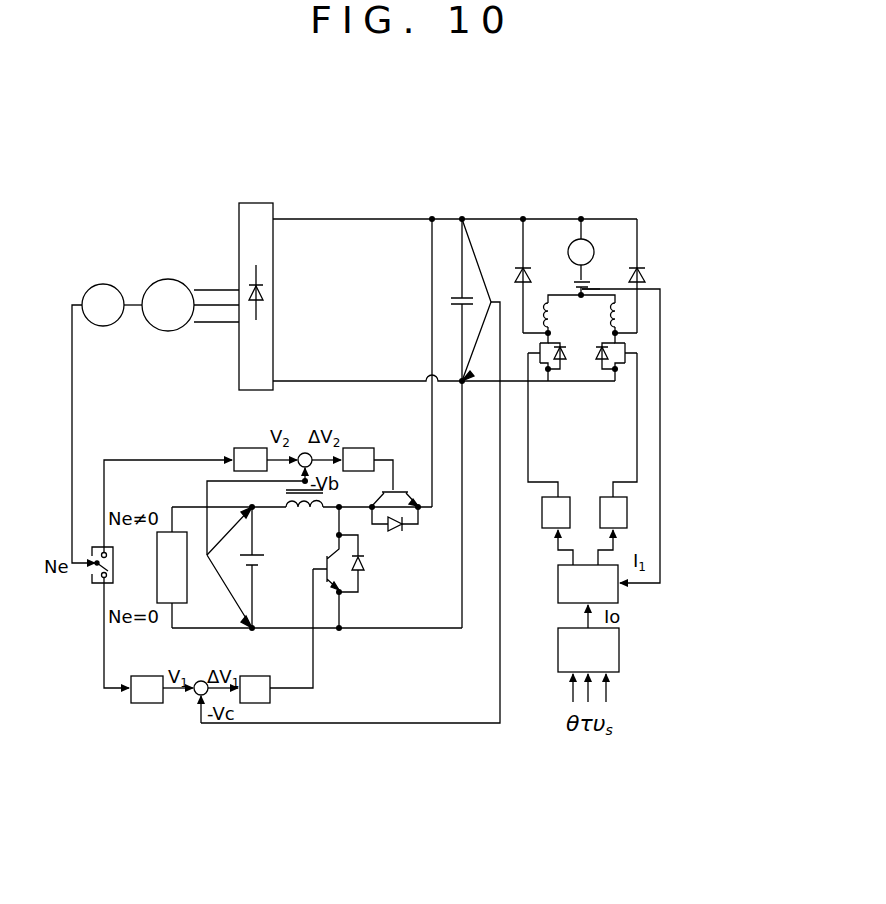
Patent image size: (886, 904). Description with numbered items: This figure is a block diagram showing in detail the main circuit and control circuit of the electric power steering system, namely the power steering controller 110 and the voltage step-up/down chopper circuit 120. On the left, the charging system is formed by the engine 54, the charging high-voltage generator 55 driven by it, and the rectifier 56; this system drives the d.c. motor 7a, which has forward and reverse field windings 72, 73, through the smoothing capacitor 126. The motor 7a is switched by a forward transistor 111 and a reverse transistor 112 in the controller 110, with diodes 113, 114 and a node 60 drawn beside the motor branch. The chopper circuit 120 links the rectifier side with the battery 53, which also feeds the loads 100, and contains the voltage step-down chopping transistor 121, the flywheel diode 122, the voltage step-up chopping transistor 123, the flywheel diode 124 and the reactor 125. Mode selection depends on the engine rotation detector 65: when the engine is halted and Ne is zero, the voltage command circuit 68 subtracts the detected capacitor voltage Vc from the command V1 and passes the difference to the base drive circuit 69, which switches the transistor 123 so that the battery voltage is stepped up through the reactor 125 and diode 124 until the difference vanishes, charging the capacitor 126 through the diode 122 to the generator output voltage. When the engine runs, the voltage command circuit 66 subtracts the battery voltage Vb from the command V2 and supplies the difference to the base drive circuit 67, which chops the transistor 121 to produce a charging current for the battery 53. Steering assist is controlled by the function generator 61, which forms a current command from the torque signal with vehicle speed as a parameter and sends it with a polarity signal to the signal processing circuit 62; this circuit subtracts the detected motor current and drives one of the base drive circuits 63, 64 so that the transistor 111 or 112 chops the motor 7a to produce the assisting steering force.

The engine 54 is at (107, 284).
The charging generator 55 is at (166, 279).
The rectifier 56 is at (258, 203).
The capacitor 126 is at (454, 292).
The diode 113 is at (532, 274).
The d.c. motor 7a is at (593, 245).
The current detection node 60 is at (588, 285).
The diode 114 is at (646, 277).
The field coil 72 is at (543, 320).
The field coil 73 is at (663, 317).
The forward transistor 111 is at (549, 357).
The reverse transistor 112 is at (633, 348).
The power steering controller 110 is at (727, 627).
The voltage step-down chopping voltage command circuit 66 is at (238, 448).
The base drive circuit 67 is at (366, 448).
The battery 53 is at (237, 565).
The loads 100 is at (167, 605).
The engine rotation detector 65 is at (95, 583).
The voltage command circuit 68 is at (150, 703).
The base drive circuit 69 is at (254, 703).
The base drive circuit 63 is at (548, 528).
The base drive circuit 64 is at (627, 505).
The signal processing circuit 62 is at (618, 592).
The function generator 61 is at (619, 652).
The reactor 125 is at (290, 523).
The voltage step-up chopping transistor 123 is at (325, 592).
The flywheel diode 124 is at (365, 582).
The flywheel diode 122 is at (411, 500).
The voltage step-down chopping transistor 121 is at (433, 545).
The voltage step-up/down chopper circuit 120 is at (497, 818).